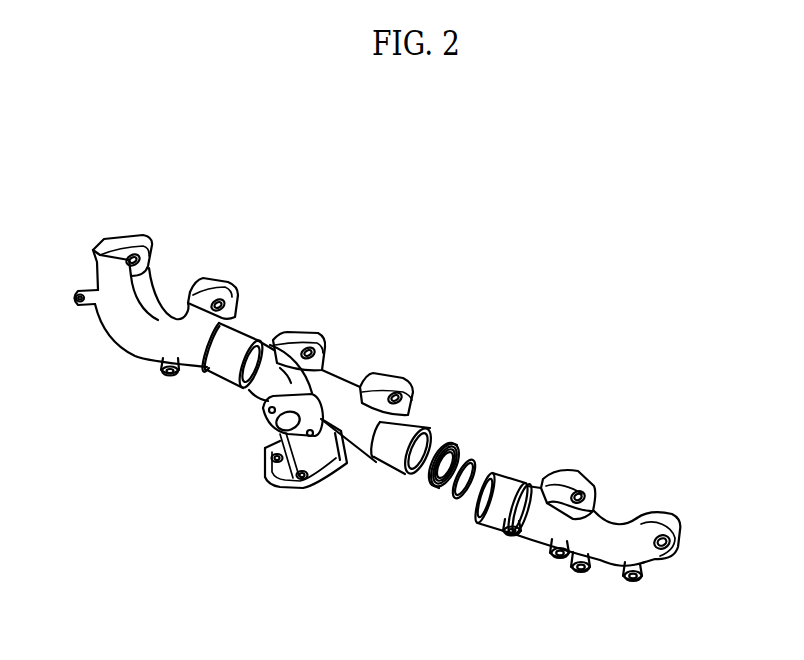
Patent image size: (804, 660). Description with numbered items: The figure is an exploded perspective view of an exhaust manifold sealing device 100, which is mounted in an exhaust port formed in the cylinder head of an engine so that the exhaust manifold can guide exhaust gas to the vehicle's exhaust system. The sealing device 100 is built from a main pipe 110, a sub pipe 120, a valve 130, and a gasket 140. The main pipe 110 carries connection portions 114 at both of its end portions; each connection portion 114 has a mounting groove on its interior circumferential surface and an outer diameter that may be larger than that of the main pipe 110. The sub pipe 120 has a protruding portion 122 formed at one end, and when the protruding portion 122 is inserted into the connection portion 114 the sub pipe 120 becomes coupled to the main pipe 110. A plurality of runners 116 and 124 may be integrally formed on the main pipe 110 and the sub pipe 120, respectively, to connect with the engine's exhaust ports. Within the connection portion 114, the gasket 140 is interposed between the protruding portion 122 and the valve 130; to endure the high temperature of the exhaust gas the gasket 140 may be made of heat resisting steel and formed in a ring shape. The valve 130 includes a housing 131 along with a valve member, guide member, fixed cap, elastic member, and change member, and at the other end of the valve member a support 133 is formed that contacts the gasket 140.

The exhaust manifold sealing device 100 is at (442, 216).
The main pipe 110 is at (258, 395).
The connection portion 114 is at (216, 372).
The runner 116 is at (301, 330).
The sub pipe 120 is at (117, 320).
The protruding portion 122 is at (497, 515).
The runner 124 is at (126, 240).
The valve 130 is at (462, 434).
The housing 131 is at (437, 435).
The support 133 is at (437, 491).
The gasket 140 is at (457, 498).